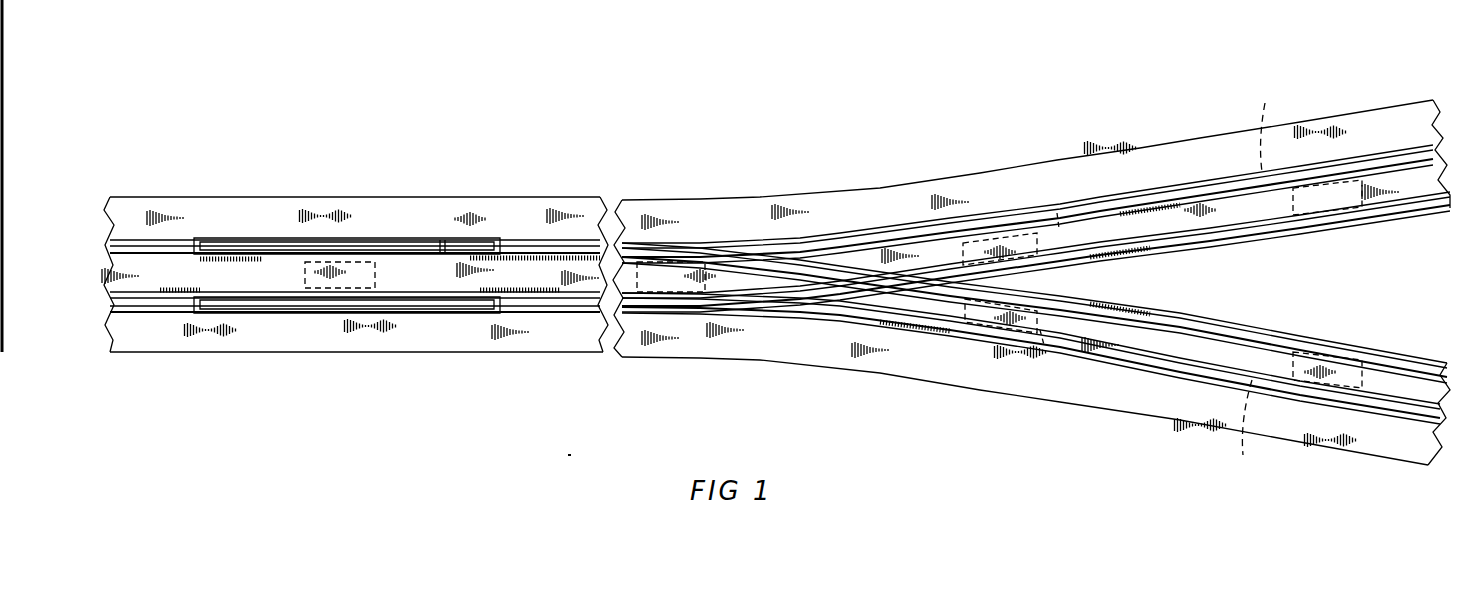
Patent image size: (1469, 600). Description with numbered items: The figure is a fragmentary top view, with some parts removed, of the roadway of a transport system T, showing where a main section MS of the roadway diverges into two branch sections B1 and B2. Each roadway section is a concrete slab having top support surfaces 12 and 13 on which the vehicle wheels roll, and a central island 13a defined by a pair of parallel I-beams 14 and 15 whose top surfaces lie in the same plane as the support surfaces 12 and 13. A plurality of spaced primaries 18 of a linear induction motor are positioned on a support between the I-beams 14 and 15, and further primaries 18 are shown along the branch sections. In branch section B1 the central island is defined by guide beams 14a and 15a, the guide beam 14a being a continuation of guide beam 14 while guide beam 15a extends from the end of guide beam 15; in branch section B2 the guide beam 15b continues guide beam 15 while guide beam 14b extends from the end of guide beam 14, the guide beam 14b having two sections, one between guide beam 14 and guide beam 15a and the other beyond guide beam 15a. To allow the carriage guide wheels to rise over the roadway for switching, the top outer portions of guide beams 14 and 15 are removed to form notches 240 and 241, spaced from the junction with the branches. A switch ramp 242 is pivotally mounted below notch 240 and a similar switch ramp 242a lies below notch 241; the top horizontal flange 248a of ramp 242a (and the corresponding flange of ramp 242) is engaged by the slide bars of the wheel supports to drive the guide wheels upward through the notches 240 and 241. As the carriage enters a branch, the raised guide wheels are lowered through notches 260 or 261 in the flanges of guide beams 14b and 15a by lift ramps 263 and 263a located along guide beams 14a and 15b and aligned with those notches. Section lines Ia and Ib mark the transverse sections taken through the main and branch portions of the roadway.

The top support surface 12 is at (379, 345).
The top support surface 13 is at (297, 197).
The central island 13a is at (557, 277).
The I-beam 14 is at (215, 291).
The guide beam 14a is at (850, 316).
The guide beam 14b is at (1407, 210).
The I-beam 15 is at (138, 257).
The guide beam 15a is at (1398, 357).
The guide beam 15b is at (1386, 158).
The primary 18 is at (378, 275).
The notch 240 is at (282, 301).
The notch 241 is at (242, 250).
The switch ramp 242 is at (440, 309).
The switch ramp 242a is at (410, 241).
The top horizontal flange 248a is at (468, 241).
The notch 260 is at (1243, 240).
The notch 261 is at (1247, 322).
The lift ramp 263 is at (1249, 431).
The lift ramp 263a is at (1275, 124).
The main section MS is at (365, 190).
The transport system T is at (851, 131).
The branch section B1 is at (1096, 410).
The branch section B2 is at (1057, 162).
The section line Ia is at (152, 318).
The section line Ib is at (958, 347).